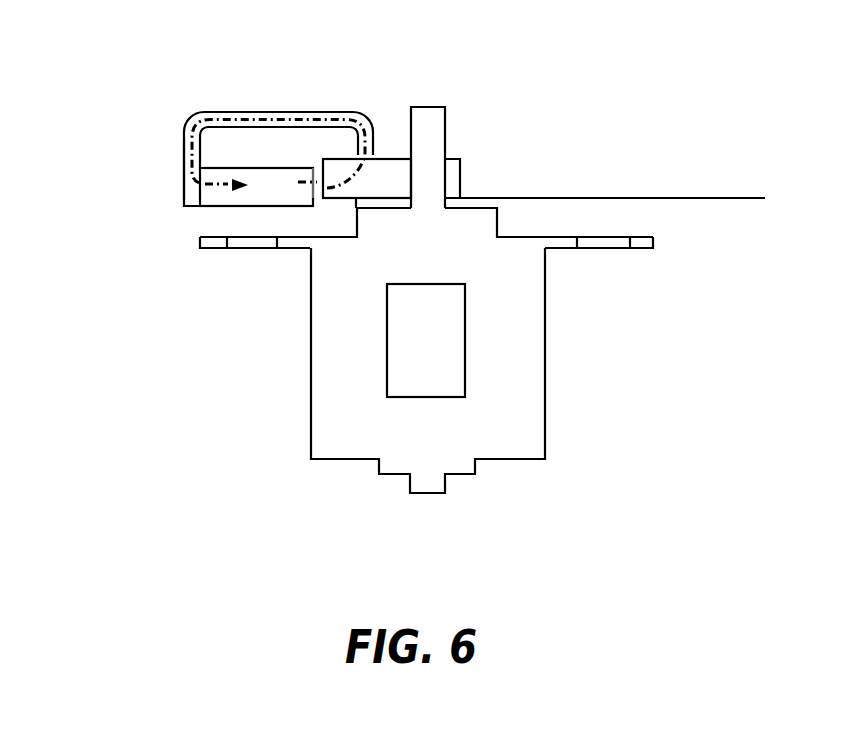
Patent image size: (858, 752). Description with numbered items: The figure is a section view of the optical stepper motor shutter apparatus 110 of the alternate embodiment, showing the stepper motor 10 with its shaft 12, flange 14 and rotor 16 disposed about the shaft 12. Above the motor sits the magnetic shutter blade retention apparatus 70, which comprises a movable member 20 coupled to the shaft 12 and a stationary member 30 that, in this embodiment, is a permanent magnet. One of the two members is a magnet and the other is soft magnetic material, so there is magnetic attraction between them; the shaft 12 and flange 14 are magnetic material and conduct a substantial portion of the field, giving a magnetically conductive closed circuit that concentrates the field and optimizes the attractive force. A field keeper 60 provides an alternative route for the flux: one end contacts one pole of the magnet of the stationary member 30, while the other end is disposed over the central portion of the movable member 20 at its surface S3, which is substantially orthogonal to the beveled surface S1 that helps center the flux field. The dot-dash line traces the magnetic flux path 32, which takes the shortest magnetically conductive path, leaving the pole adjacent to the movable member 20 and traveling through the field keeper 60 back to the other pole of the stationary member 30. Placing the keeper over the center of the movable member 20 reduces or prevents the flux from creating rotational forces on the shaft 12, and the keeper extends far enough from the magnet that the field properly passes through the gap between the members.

The stepper motor 10 is at (302, 402).
The shaft 12 is at (428, 138).
The flange 14 is at (260, 248).
The rotor 16 is at (443, 343).
The movable member 20 is at (383, 162).
The stationary member 30 is at (228, 182).
The magnetic flux path 32 is at (185, 155).
The field keeper 60 is at (223, 110).
The magnetic shutter blade retention apparatus 70 is at (137, 97).
The beveled surface S1 is at (322, 162).
The surface of movable member S3 is at (349, 157).
The optical stepper motor shutter apparatus 110 is at (840, 413).